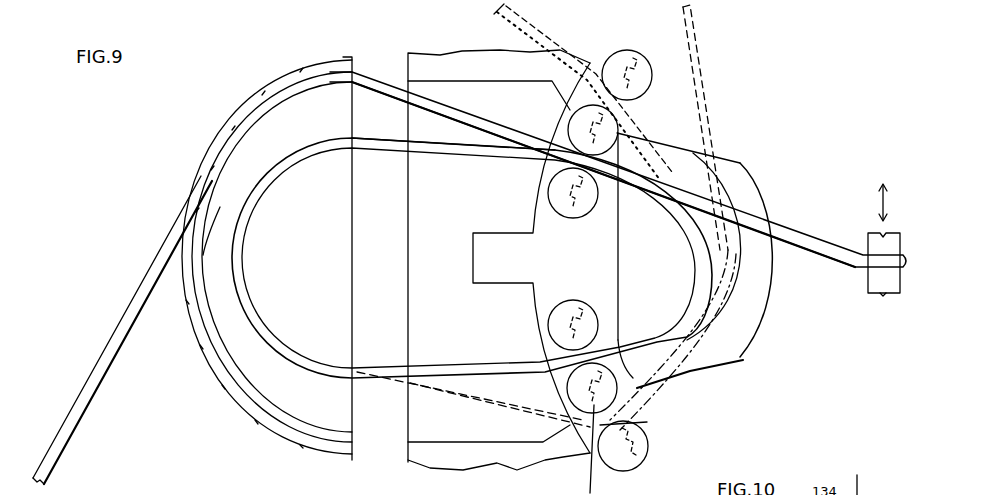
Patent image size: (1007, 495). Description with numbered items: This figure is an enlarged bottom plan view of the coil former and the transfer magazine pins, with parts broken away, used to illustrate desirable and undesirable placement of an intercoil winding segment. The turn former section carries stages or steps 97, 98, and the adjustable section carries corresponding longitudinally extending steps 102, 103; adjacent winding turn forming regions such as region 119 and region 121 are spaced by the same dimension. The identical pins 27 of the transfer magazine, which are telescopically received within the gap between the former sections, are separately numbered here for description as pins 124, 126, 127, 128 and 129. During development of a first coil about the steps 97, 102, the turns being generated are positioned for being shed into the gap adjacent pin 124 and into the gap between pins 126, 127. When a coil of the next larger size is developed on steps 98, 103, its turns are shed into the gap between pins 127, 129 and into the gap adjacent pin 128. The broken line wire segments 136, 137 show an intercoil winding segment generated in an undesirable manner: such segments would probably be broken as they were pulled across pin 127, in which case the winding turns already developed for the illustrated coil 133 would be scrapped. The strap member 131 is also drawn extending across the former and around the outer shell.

The pins 27 is at (645, 426).
The step 97 is at (692, 263).
The step 98 is at (476, 258).
The step 102 is at (595, 259).
The step 103 is at (220, 225).
The winding turn forming region 119 is at (740, 316).
The winding turn forming region 121 is at (270, 408).
The winding pin 124 is at (549, 321).
The winding pin 126 is at (549, 191).
The winding pin 127 is at (570, 118).
The winding pin 128 is at (649, 440).
The winding pin 129 is at (625, 50).
The strap 131 is at (375, 72).
The coil 133 is at (463, 152).
The wire segment 136 is at (703, 88).
The wire segment 137 is at (520, 28).